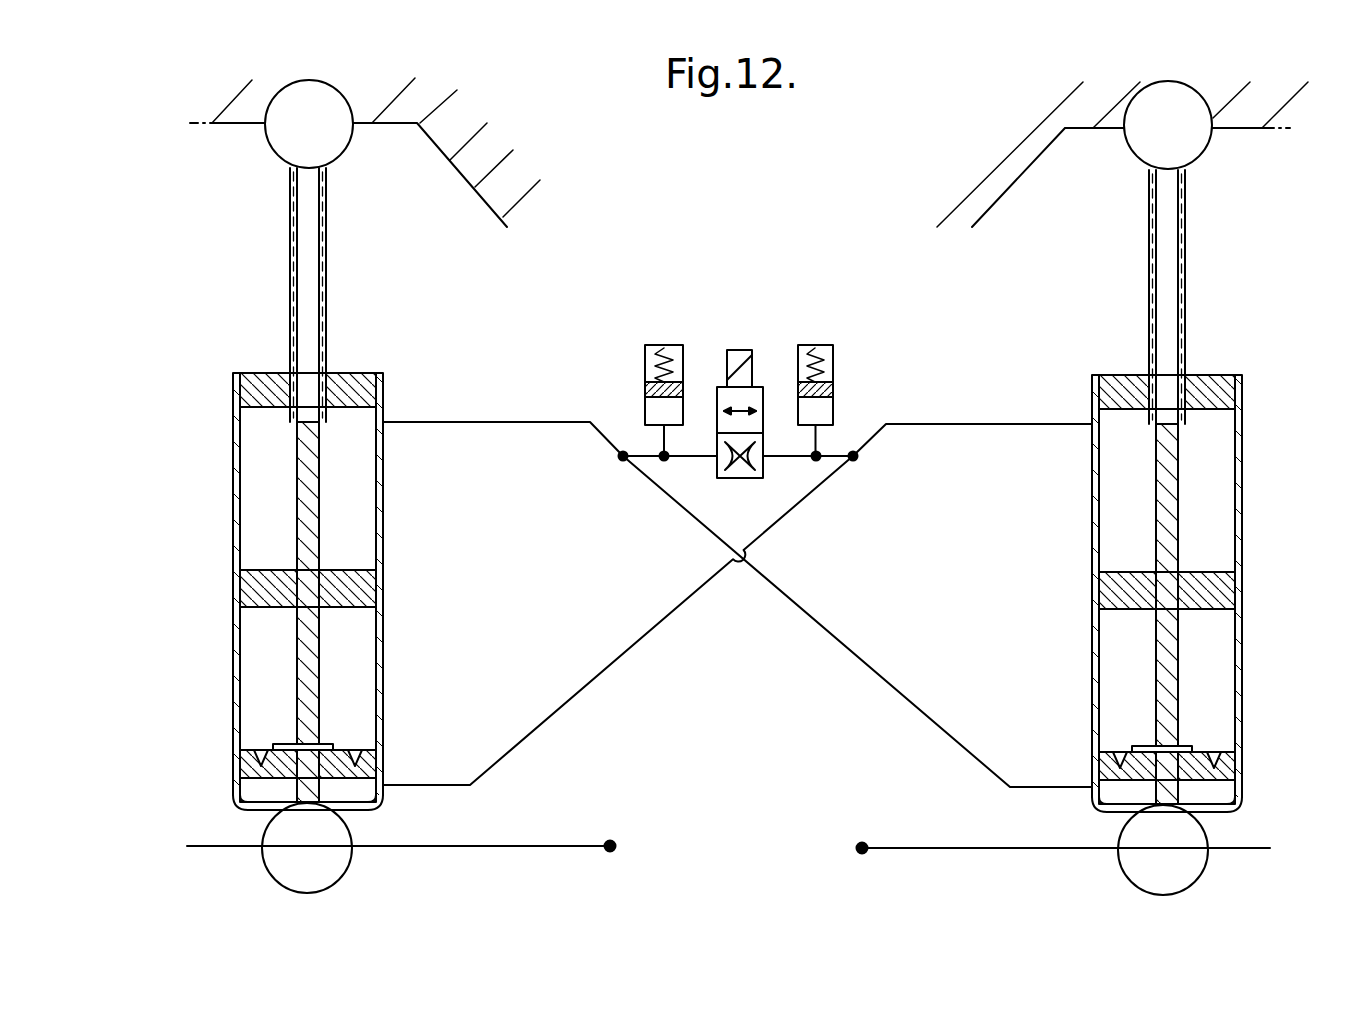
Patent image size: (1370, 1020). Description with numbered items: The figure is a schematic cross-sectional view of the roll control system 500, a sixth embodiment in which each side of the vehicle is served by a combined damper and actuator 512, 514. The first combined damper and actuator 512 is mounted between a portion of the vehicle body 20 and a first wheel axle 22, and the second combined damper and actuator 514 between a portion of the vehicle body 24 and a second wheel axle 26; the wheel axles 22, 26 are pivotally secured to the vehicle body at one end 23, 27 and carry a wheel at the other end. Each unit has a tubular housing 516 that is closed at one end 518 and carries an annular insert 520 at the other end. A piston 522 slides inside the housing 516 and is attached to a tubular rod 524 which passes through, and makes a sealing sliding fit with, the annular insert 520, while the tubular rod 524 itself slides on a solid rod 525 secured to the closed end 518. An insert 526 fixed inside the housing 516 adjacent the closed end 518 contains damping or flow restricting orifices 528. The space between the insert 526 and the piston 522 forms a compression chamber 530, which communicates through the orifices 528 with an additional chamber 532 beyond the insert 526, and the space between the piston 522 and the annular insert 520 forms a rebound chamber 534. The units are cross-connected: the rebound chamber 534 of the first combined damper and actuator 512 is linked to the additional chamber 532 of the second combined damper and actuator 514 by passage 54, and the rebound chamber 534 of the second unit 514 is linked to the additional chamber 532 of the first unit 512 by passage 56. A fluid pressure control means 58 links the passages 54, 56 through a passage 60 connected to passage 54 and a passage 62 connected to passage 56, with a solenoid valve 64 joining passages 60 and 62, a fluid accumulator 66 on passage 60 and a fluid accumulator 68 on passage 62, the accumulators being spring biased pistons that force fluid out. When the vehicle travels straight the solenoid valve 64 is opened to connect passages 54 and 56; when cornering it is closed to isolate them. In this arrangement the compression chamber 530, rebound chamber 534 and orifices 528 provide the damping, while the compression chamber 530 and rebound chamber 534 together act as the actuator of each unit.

The portion of the vehicle body 20 is at (227, 124).
The portion of the vehicle body 24 is at (1257, 130).
The first wheel axle 22 is at (502, 847).
The pivot end of first wheel axle 23 is at (612, 852).
The second wheel axle 26 is at (980, 849).
The pivot end of second wheel axle 27 is at (862, 854).
The passage 54 is at (807, 622).
The passage 56 is at (658, 625).
The fluid pressure control means 58 is at (784, 317).
The passage 60 is at (677, 458).
The passage 62 is at (795, 458).
The solenoid valve 64 is at (737, 349).
The fluid accumulator 66 is at (655, 343).
The fluid accumulator 68 is at (820, 345).
The roll control system 500 is at (723, 714).
The combined damper and actuator 512 is at (398, 365).
The combined damper and actuator 514 is at (1283, 366).
The tubular housing 516 is at (385, 521).
The closed end 518 is at (250, 812).
The annular insert 520 is at (383, 372).
The piston 522 is at (360, 588).
The tubular rod 524 is at (328, 283).
The solid rod 525 is at (312, 643).
The insert 526 is at (248, 776).
The damping or flow restricting orifices 528 is at (262, 752).
The compression chamber 530 is at (363, 694).
The additional chamber 532 is at (352, 795).
The rebound chamber 534 is at (365, 463).